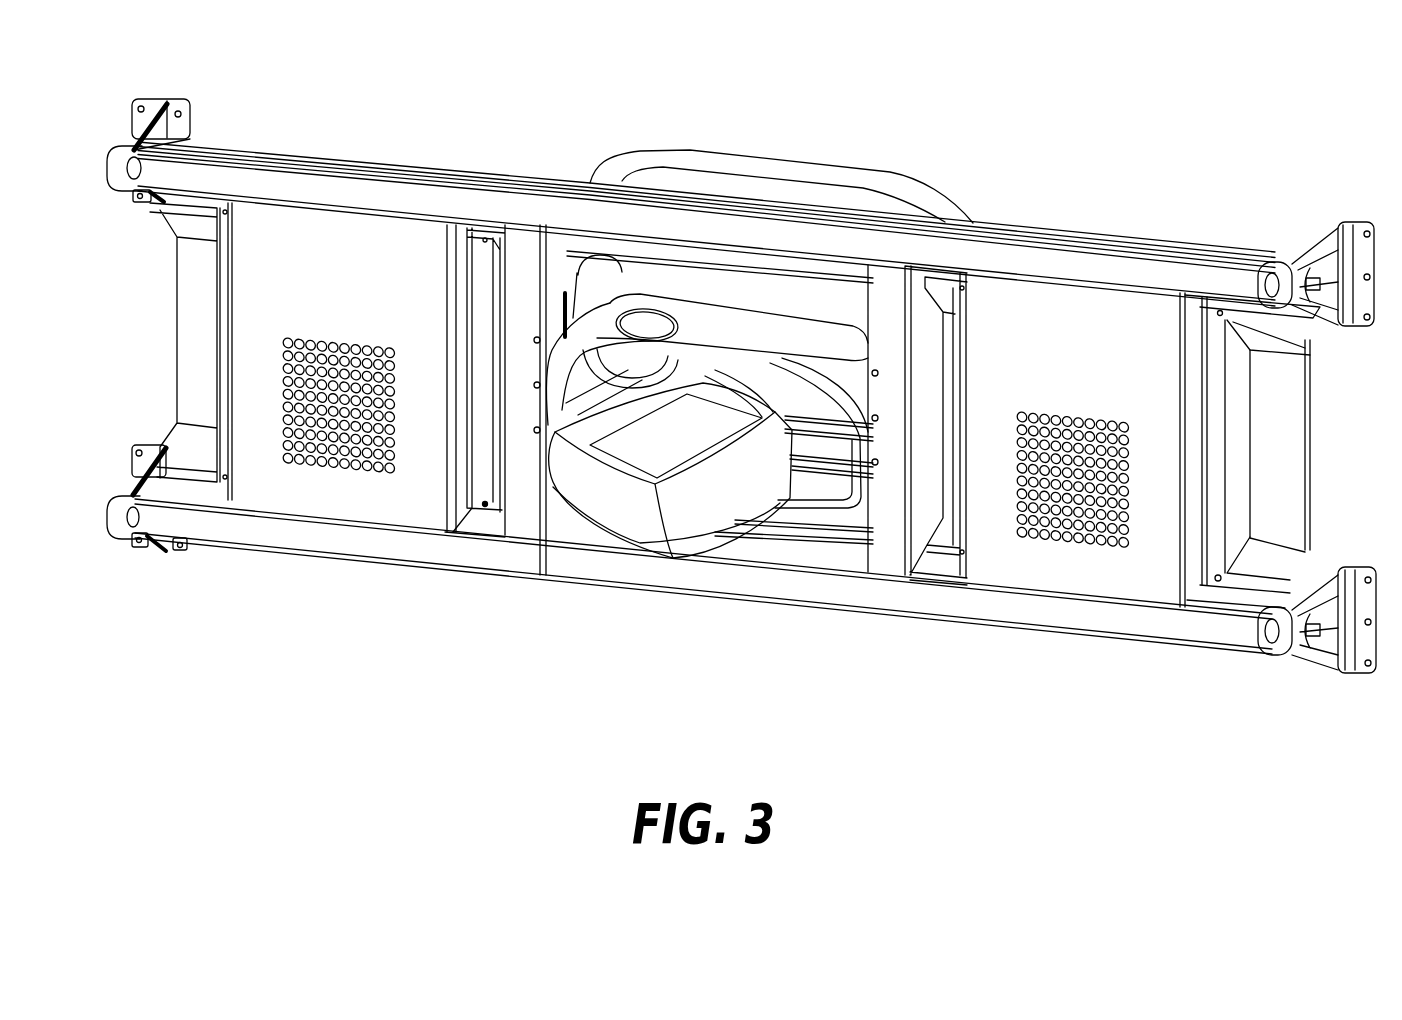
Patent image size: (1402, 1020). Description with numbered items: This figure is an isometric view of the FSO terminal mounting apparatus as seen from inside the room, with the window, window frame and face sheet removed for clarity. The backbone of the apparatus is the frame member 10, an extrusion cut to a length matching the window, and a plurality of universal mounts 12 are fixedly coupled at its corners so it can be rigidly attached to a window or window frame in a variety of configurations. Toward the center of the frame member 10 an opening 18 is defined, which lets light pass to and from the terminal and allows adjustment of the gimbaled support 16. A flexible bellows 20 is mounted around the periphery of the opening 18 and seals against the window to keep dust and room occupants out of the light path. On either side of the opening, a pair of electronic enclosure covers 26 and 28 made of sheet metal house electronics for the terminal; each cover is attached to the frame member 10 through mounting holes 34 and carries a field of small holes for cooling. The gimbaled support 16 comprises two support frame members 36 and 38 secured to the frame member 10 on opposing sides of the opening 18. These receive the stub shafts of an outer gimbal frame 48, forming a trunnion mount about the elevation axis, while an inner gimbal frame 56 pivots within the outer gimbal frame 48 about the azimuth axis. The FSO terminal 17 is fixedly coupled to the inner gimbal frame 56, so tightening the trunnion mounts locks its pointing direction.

The frame member 10 is at (1288, 437).
The universal mount 12 is at (141, 216).
The gimbaled support 16 is at (526, 514).
The FSO terminal 17 is at (640, 518).
The opening 18 is at (621, 268).
The flexible bellows 20 is at (800, 190).
The electronic enclosure cover 26 is at (308, 224).
The electronic enclosure cover 28 is at (1053, 296).
The mounting hole 34 is at (573, 413).
The support frame member 36 is at (885, 275).
The support frame member 38 is at (500, 235).
The outer gimbal frame 48 is at (608, 320).
The inner gimbal frame 56 is at (485, 504).